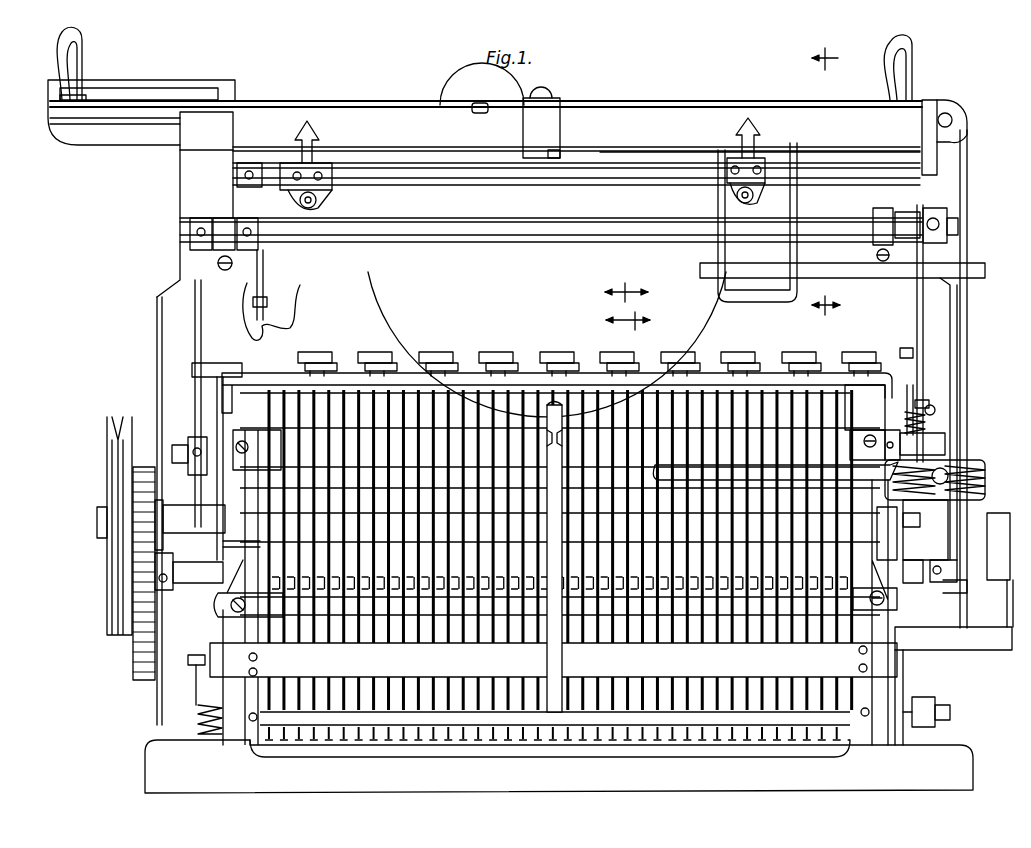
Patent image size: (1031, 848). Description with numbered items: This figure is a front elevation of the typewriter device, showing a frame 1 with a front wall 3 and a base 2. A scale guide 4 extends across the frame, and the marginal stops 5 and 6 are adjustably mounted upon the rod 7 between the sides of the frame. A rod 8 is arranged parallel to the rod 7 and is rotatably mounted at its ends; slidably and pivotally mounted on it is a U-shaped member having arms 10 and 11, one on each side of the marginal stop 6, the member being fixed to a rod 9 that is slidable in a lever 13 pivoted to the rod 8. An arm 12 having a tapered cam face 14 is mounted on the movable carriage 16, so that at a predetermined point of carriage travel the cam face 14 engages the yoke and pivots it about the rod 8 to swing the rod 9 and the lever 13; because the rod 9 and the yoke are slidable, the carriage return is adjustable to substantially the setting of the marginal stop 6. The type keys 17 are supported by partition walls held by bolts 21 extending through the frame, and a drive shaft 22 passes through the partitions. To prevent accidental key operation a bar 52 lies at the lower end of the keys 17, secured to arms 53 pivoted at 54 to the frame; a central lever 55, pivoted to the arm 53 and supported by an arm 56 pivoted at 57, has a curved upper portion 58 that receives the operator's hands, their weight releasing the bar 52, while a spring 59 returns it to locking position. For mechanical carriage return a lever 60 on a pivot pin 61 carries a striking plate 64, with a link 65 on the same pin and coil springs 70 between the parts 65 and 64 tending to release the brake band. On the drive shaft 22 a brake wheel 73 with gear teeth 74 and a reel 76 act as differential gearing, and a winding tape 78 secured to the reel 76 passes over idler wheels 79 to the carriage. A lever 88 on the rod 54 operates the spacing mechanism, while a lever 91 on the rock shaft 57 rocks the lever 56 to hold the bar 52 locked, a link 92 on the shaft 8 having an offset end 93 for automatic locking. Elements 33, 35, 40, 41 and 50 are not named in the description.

The frame 1 is at (180, 185).
The base 2 is at (240, 778).
The front wall 3 is at (157, 345).
The scale guide 4 is at (610, 112).
The marginal stop 5 is at (316, 118).
The marginal stop 6 is at (752, 116).
The rod 7 is at (618, 172).
The rod 8 is at (572, 232).
The rod 9 is at (988, 270).
The arm of U-shaped member 10 is at (702, 248).
The arm of U-shaped member 11 is at (798, 205).
The arm 12 is at (562, 100).
The lever 13 is at (917, 306).
The tapered cam face 14 is at (562, 150).
The carriage 16 is at (138, 130).
The type keys 17 is at (292, 358).
The bolts 21 is at (898, 552).
The drive shaft 22 is at (203, 592).
The gear 33 is at (133, 665).
The pulley 35 is at (107, 443).
The post 40 is at (180, 275).
The block 41 is at (200, 475).
The rail 50 is at (855, 372).
The bar 52 is at (768, 665).
The arms 53 is at (868, 728).
The pivot/rockshaft 54 is at (952, 712).
The central lever 55 is at (547, 648).
The arm 56 is at (222, 398).
The rock shaft 57 is at (182, 445).
The upper transversely extending portion 58 is at (899, 348).
The spring 59 is at (197, 695).
The lever 60 is at (920, 408).
The pivot pin 61 is at (968, 462).
The striking plate 64 is at (835, 470).
The link 65 is at (926, 530).
The coil springs 70 is at (920, 512).
The brake wheel or sheave 73 is at (1005, 520).
The gear teeth 74 is at (1004, 565).
The reel 76 is at (960, 618).
The winding tape 78 is at (882, 100).
The idler wheels 79 is at (955, 100).
The lever 88 is at (925, 697).
The lever 91 is at (262, 200).
The link 92 is at (264, 258).
The offset end 93 is at (267, 302).